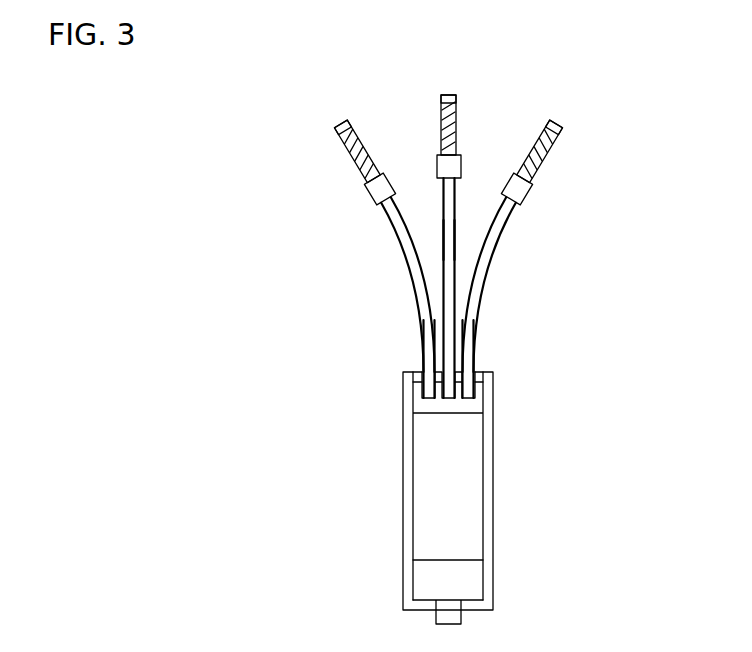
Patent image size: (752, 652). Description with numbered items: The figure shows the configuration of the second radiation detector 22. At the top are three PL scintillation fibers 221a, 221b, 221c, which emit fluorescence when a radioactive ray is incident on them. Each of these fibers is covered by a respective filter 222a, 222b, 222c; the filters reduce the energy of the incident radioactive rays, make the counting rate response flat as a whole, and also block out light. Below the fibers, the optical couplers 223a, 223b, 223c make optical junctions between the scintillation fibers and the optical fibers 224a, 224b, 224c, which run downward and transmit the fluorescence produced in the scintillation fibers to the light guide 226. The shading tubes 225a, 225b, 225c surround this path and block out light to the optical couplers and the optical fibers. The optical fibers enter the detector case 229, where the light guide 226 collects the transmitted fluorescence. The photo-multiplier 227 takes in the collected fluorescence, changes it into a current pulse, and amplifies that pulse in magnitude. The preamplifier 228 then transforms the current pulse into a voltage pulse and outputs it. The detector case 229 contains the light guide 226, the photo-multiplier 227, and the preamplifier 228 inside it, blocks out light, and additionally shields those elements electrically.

The second radiation detector 22 is at (727, 53).
The PL scintillation fiber 221a is at (355, 157).
The PL scintillation fiber 221b is at (442, 118).
The PL scintillation fiber 221c is at (537, 155).
The filter 222a is at (342, 123).
The filter 222b is at (449, 95).
The filter 222c is at (552, 120).
The optical coupler 223a is at (373, 193).
The optical coupler 223b is at (461, 166).
The optical coupler 223c is at (527, 188).
The optical fiber 224a is at (425, 280).
The optical fiber 224b is at (455, 233).
The optical fiber 224c is at (478, 277).
The shading tube 225a is at (420, 333).
The shading tube 225b is at (418, 239).
The shading tube 225c is at (477, 335).
The light guide 226 is at (484, 398).
The photo-multiplier 227 is at (484, 492).
The preamplifier 228 is at (484, 580).
The detector case 229 is at (404, 460).